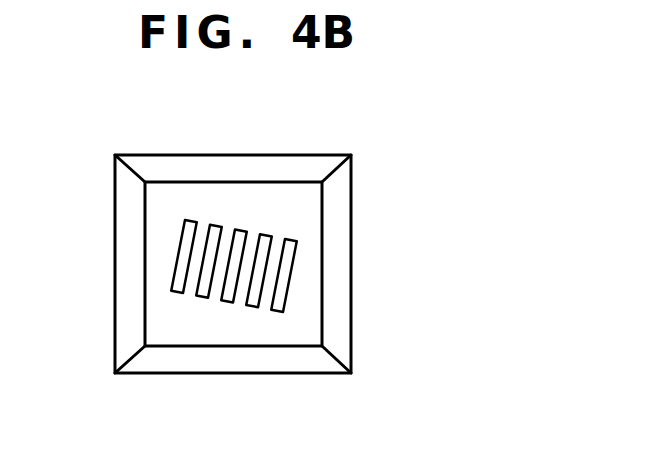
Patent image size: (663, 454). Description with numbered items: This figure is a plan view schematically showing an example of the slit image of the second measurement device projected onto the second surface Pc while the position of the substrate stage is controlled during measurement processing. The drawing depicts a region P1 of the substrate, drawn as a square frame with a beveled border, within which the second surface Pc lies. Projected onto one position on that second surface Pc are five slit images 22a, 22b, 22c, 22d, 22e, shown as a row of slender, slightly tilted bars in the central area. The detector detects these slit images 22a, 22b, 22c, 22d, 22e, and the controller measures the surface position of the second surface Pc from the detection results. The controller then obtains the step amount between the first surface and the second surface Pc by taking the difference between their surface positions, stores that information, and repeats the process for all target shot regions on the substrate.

The pad / package P1 is at (334, 230).
The second surface Pc is at (192, 323).
The image of the slit 22a is at (191, 221).
The image of the slit 22b is at (216, 226).
The image of the slit 22c is at (241, 231).
The image of the slit 22d is at (266, 235).
The image of the slit 22e is at (291, 240).